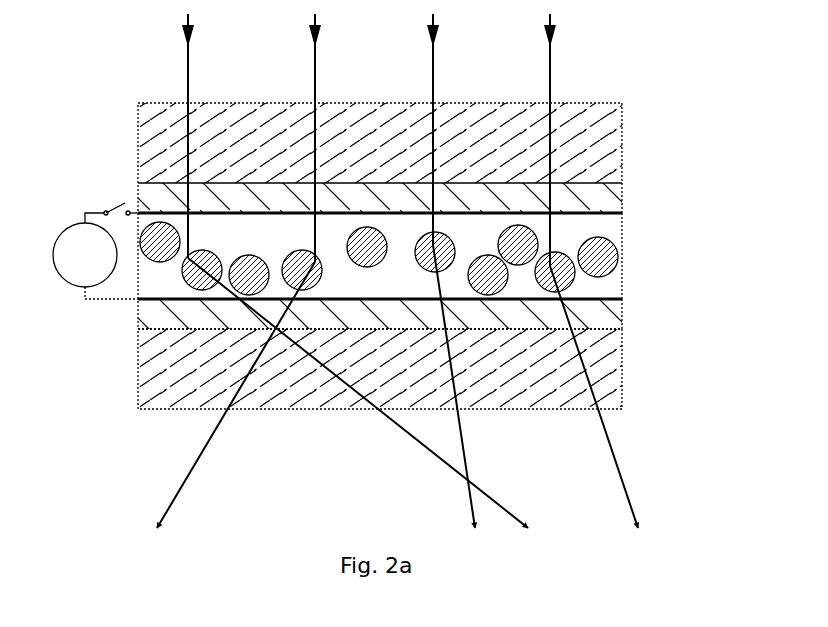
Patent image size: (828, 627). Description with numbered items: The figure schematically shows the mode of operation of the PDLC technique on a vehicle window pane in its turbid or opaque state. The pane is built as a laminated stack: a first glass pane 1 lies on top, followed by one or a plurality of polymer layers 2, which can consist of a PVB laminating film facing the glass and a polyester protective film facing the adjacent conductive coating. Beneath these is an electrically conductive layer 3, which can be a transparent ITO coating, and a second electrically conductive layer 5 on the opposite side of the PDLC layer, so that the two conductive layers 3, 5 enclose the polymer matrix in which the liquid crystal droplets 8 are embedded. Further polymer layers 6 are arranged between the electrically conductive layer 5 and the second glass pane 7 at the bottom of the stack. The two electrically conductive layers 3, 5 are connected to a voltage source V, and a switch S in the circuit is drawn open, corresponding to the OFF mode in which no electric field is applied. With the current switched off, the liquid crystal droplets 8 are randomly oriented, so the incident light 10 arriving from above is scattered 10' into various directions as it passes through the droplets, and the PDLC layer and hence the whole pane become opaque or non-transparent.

The first glass pane 1 is at (622, 142).
The polymer layers 2 is at (622, 197).
The electrically conductive layer 3 is at (622, 213).
The electrically conductive layer 5 is at (622, 299).
The polymer layers 6 is at (622, 313).
The second glass pane 7 is at (622, 368).
The liquid crystal droplets 8 is at (598, 257).
The incident light 10 is at (342, 140).
The scattered light 10' is at (397, 386).
The switch S is at (112, 205).